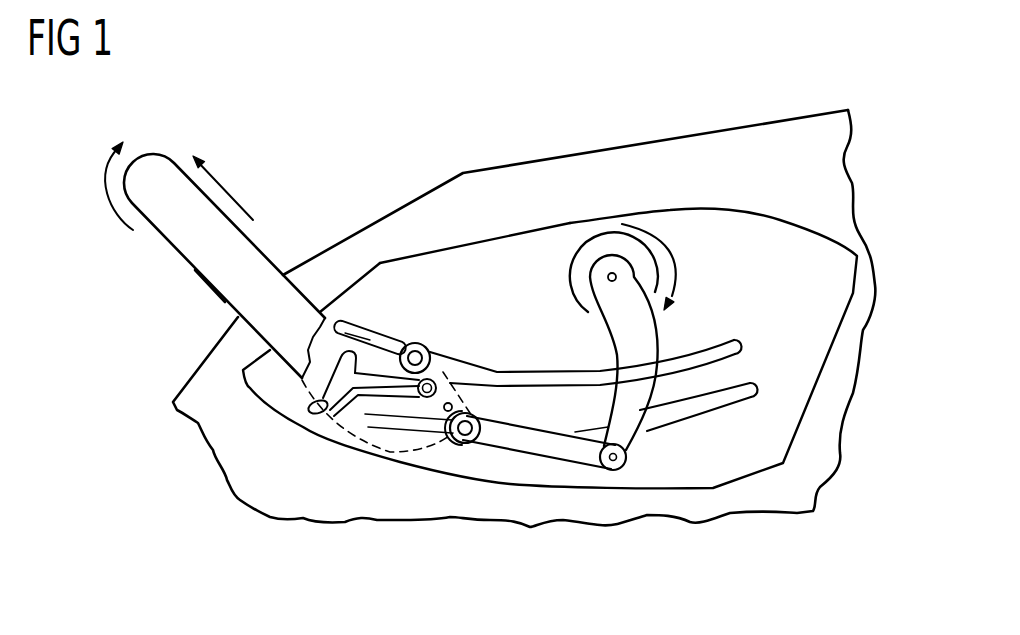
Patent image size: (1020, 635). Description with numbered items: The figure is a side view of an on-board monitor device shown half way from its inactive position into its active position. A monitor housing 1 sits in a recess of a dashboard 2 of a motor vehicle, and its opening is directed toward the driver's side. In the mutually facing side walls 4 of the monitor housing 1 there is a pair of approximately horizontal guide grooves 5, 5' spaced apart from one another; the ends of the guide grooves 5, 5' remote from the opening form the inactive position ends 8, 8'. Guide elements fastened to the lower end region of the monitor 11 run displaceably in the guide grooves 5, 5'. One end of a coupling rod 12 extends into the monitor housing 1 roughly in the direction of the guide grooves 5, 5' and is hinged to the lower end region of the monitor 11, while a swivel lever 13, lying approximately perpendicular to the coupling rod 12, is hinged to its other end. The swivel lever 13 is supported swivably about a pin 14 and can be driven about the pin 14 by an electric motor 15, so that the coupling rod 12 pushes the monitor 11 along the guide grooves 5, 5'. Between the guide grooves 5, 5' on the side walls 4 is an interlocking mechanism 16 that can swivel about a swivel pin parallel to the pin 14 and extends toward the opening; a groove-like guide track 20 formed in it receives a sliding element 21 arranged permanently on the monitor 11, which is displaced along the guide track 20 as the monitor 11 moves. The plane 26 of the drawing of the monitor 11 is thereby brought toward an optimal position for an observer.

The monitor housing 1 is at (737, 208).
The dashboard 2 is at (668, 140).
The side walls 4 is at (445, 268).
The guide groove 5 is at (669, 362).
The guide groove 5' is at (773, 409).
The inactive position end 8 is at (824, 330).
The inactive position end 8' is at (829, 387).
The monitor 11 is at (202, 248).
The coupling rod 12 is at (527, 443).
The swivel lever 13 is at (640, 402).
The pin 14 is at (612, 271).
The electric motor 15 is at (580, 263).
The interlocking mechanism 16 is at (383, 380).
The guide track 20 is at (380, 398).
The sliding element 21 is at (447, 412).
The plane 26 is at (208, 287).